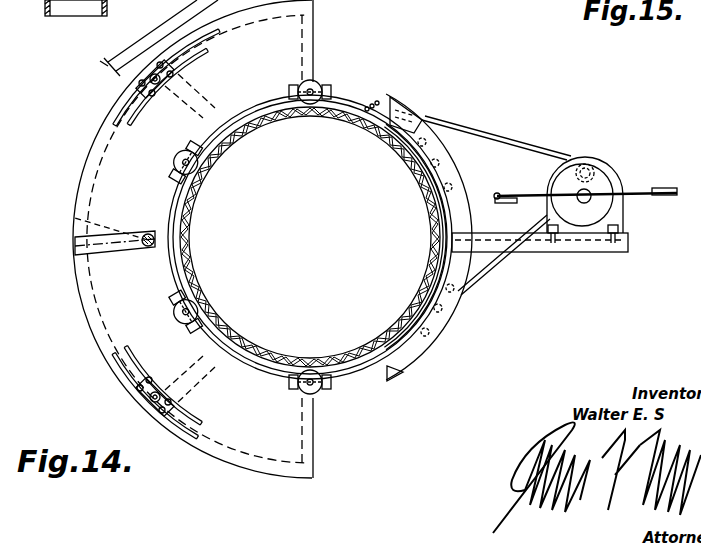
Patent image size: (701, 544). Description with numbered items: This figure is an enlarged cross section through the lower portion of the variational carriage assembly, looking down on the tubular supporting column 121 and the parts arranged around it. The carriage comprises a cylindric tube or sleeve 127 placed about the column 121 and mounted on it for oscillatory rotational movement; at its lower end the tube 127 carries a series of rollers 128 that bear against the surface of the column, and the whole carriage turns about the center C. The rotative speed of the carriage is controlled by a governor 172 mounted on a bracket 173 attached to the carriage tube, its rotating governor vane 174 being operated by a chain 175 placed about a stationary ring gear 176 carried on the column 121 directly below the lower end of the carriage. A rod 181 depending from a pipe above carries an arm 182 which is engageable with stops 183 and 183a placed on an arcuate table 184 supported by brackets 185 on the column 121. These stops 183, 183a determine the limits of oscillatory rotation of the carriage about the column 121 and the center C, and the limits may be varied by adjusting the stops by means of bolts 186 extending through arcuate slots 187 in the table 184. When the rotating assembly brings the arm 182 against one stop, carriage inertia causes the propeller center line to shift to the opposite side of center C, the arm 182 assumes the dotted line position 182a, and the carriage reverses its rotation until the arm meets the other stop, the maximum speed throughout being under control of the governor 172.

The tubular supporting column 121 is at (352, 357).
The cylindric tube or sleeve 127 is at (420, 118).
The rollers 128 is at (318, 85).
The governor 172 is at (632, 170).
The bracket 173 is at (566, 245).
The governor vane 174 is at (635, 198).
The chain 175 is at (517, 143).
The ring gear 176 is at (371, 110).
The rod 181 is at (147, 248).
The arm 182 is at (103, 250).
The dotted line position of arm 182a is at (105, 218).
The stop 183 is at (170, 80).
The stop 183a is at (150, 400).
The arcuate table 184 is at (235, 442).
The brackets 185 is at (312, 43).
The bolts 186 is at (172, 76).
The arcuate slots 187 is at (185, 50).
The center of carriage rotation C is at (320, 237).